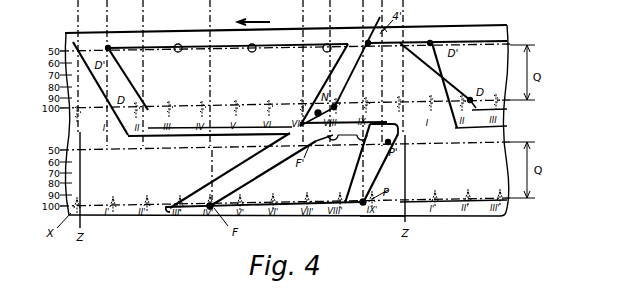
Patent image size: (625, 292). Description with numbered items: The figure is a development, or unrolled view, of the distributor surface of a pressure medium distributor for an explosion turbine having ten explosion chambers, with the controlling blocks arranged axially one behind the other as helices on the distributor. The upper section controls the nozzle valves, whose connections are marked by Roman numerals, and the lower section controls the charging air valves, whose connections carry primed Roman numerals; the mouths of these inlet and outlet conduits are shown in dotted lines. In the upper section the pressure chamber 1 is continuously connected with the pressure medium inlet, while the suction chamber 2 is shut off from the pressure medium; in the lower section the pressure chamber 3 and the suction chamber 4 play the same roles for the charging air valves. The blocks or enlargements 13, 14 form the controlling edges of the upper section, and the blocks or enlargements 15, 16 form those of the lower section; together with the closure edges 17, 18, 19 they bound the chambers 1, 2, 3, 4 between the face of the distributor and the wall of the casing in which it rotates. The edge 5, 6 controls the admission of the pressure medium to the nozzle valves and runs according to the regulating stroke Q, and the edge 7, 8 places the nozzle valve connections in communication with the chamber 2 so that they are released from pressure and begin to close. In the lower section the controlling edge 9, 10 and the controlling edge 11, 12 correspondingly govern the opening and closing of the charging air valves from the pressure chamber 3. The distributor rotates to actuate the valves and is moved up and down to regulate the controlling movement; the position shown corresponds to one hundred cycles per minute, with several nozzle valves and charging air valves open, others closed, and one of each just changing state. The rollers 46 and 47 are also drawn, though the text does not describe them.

The pressure chamber 1 is at (355, 85).
The suction chamber 2 is at (282, 75).
The pressure chamber 3 is at (339, 157).
The suction chamber 4 is at (285, 157).
The controlling edge 5 is at (150, 136).
The controlling edge 6 is at (108, 47).
The controlling edge 7 is at (316, 119).
The controlling edge 8 is at (357, 59).
The controlling edge 9 is at (208, 203).
The controlling edge 10 is at (331, 138).
The controlling edge 11 is at (360, 217).
The controlling edge 12 is at (400, 124).
The block or enlargement 13 is at (110, 88).
The block or enlargement 14 is at (324, 85).
The block or enlargement 15 is at (243, 170).
The block or enlargement 16 is at (371, 164).
The closure edge 17 is at (482, 22).
The closure edge 18 is at (196, 129).
The closure edge 19 is at (312, 216).
The guide roller 46 is at (180, 45).
The guide roller 47 is at (360, 139).